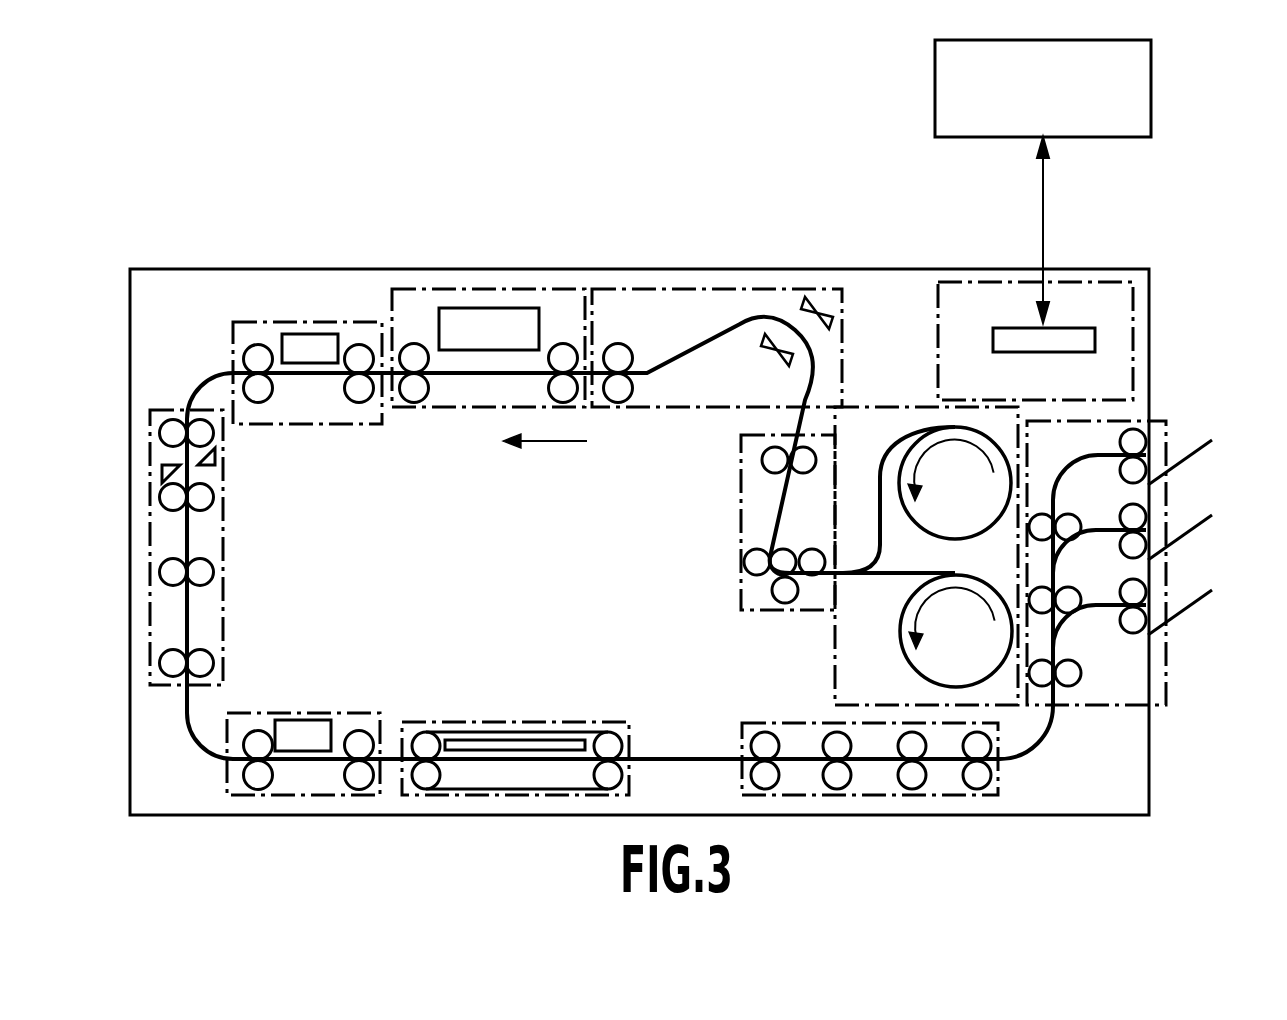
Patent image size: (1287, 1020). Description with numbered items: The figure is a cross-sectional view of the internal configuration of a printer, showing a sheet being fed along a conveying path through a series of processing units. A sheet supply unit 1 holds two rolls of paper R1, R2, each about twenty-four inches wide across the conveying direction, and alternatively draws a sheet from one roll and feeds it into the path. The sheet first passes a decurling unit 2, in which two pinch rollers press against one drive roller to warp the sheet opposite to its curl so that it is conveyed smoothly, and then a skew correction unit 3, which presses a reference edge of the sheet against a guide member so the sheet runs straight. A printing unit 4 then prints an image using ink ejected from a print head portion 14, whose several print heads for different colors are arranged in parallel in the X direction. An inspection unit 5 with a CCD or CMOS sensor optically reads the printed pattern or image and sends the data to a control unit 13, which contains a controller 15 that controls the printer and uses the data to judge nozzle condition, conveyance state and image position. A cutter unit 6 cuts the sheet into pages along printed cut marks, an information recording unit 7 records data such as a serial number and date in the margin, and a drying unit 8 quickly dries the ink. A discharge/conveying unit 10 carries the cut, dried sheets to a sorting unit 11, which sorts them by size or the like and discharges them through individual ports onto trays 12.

The sheet supply unit 1 is at (1148, 90).
The decurling unit 2 is at (184, 268).
The skew correction unit 3 is at (648, 409).
The printing unit 4 is at (447, 409).
The inspection unit 5 is at (305, 426).
The cutter unit 6 is at (226, 548).
The information recording unit 7 is at (303, 712).
The drying unit 8 is at (432, 720).
The discharge/conveying unit 10 is at (800, 720).
The sorting unit 11 is at (1166, 672).
The tray 12 is at (1222, 428).
The control unit 13 is at (937, 318).
The print head portion 14 is at (450, 337).
The controller 15 is at (993, 341).
The roll of paper R1 is at (968, 525).
The roll of paper R2 is at (897, 640).
The X direction X is at (545, 456).